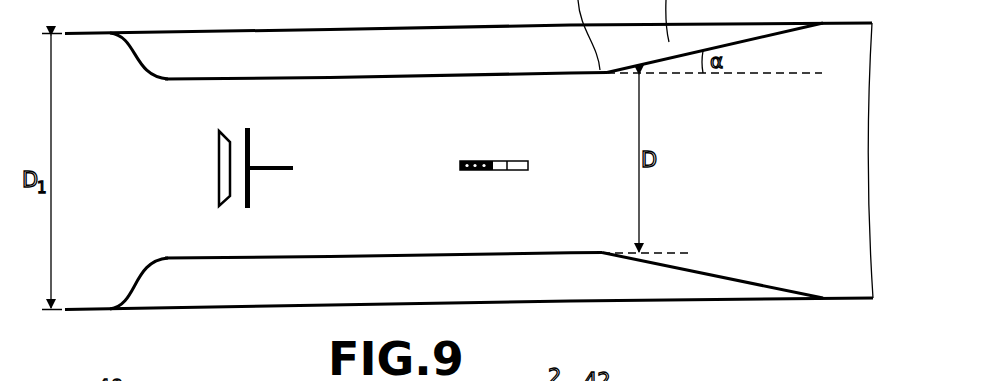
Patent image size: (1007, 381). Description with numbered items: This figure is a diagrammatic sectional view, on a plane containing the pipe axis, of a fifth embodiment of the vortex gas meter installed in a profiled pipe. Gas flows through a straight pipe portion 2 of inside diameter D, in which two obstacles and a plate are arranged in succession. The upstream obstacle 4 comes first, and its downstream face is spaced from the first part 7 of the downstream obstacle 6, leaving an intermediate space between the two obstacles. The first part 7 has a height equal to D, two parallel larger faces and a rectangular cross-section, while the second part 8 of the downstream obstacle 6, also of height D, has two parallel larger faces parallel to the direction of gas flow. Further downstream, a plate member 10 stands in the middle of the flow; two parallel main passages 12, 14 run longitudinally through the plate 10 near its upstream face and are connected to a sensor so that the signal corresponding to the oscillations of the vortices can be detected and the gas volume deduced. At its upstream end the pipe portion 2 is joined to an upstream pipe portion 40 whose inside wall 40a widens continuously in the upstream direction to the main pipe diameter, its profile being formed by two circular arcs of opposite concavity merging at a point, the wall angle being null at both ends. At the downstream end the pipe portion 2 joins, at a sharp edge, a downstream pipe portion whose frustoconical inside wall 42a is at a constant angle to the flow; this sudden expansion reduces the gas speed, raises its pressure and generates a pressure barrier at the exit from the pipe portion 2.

The pipe portion 2 is at (262, 50).
The upstream obstacle 4 is at (231, 131).
The downstream obstacle 6 is at (288, 163).
The first part of the downstream obstacle 7 is at (247, 210).
The second part of the downstream obstacle 8 is at (272, 166).
The plate member 10 is at (512, 160).
The main passage 12 is at (470, 160).
The main passage 14 is at (486, 171).
The upstream pipe portion 40 is at (144, 295).
The inside wall of the upstream pipe portion 40a is at (128, 54).
The inside wall of the downstream pipe portion 42a is at (738, 45).